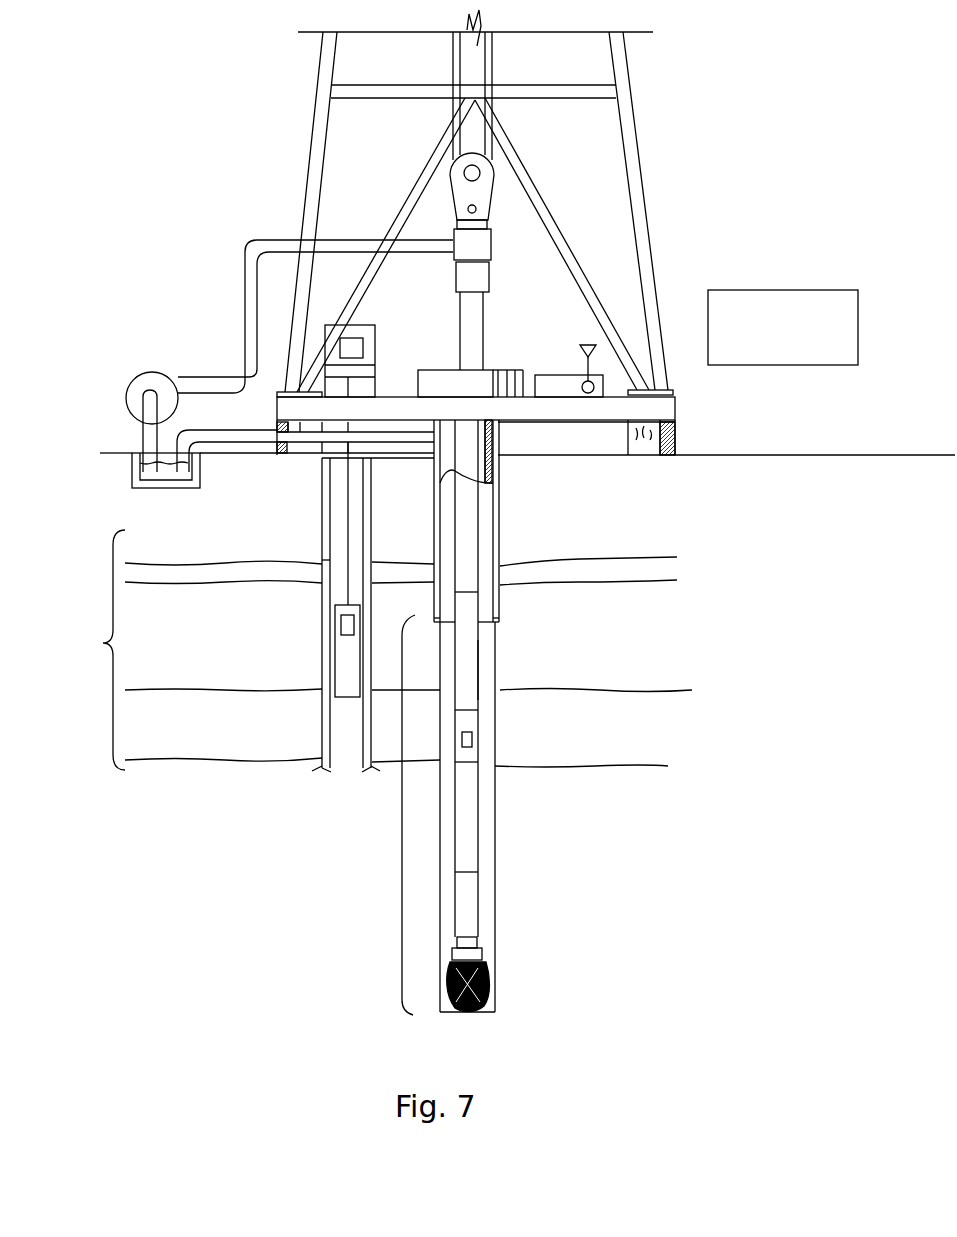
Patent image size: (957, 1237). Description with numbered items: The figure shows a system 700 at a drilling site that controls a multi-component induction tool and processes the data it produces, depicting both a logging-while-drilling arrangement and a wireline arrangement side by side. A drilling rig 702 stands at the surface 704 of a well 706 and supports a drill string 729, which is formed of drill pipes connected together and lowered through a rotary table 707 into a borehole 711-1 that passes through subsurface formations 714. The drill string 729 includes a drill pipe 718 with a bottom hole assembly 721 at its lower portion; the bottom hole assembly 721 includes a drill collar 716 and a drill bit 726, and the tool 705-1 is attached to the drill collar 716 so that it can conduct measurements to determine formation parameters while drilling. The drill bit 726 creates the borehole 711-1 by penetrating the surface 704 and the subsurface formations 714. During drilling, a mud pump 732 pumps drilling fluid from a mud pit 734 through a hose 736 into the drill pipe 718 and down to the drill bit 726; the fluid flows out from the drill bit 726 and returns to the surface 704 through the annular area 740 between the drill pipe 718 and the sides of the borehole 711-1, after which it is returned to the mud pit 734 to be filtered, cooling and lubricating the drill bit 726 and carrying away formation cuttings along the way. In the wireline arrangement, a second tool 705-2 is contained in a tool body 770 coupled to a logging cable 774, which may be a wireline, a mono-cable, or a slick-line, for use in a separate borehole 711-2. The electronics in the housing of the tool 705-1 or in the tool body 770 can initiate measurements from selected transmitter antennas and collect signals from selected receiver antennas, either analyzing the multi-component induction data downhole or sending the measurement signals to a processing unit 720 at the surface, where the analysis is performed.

The system 700 is at (248, 67).
The drilling rig 702 is at (640, 124).
The surface 704 is at (703, 455).
The tool 705-1 is at (472, 738).
The tool 705-2 is at (345, 620).
The well 706 is at (505, 452).
The rotary table 707 is at (447, 371).
The borehole 711-1 is at (488, 563).
The borehole 711-2 is at (322, 557).
The subsurface formations 714 is at (373, 650).
The drill collar 716 is at (470, 718).
The drill pipe 718 is at (479, 633).
The processing unit 720 is at (780, 290).
The bottom hole assembly 721 is at (420, 815).
The drill bit 726 is at (487, 973).
The drill string 729 is at (489, 507).
The mud pump 732 is at (157, 373).
The mud pit 734 is at (133, 444).
The hose 736 is at (243, 308).
The annular area 740 is at (487, 670).
The tool body 770 is at (337, 657).
The logging cable 774 is at (348, 511).